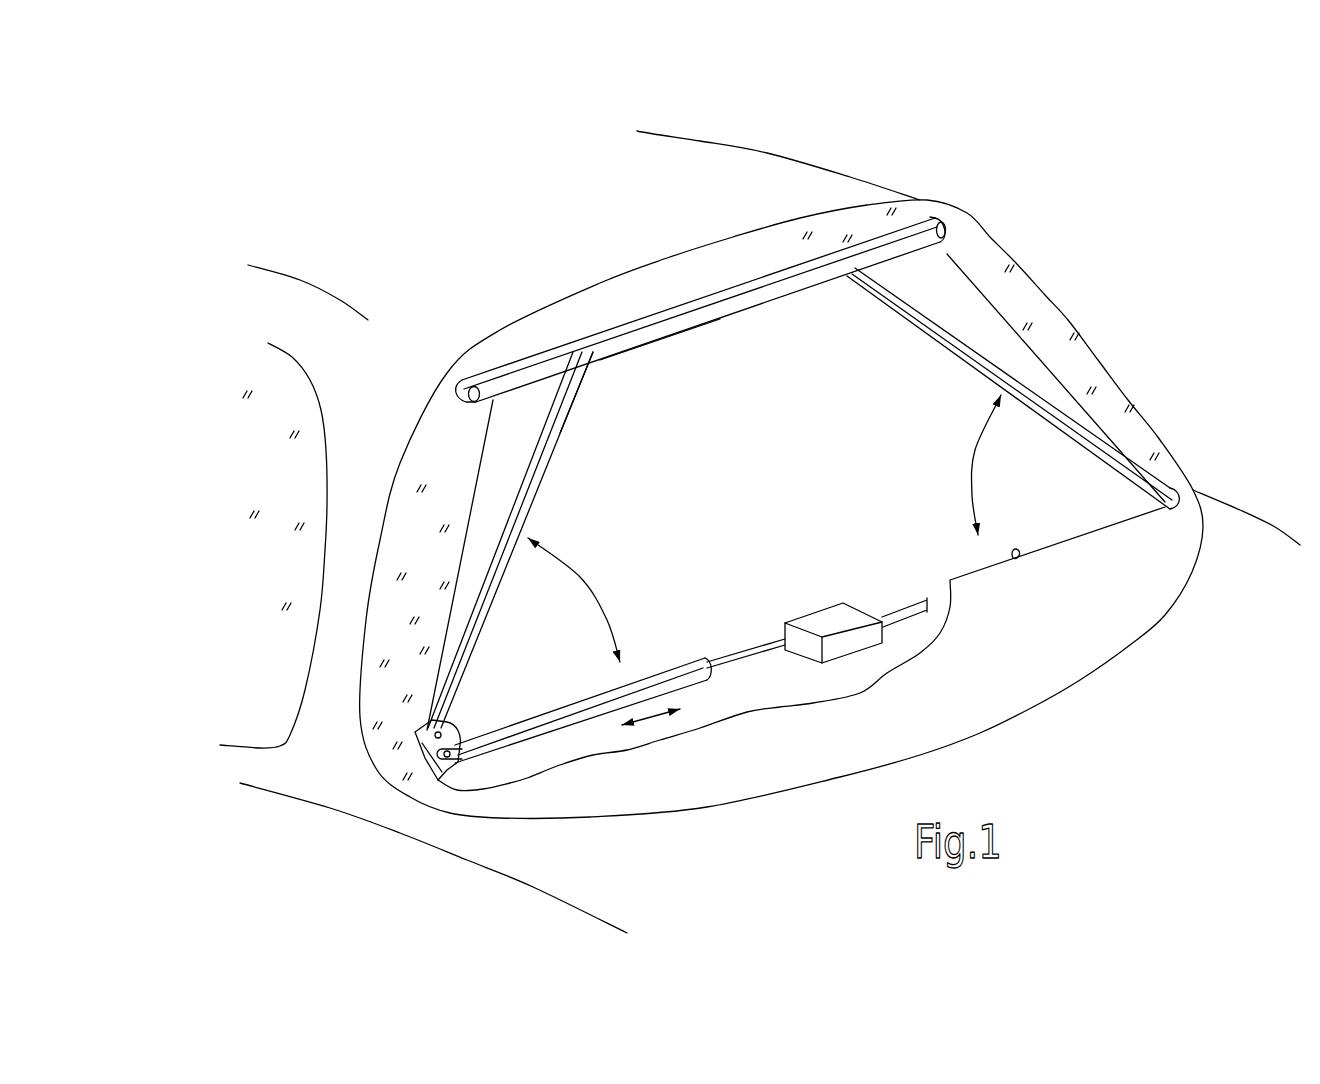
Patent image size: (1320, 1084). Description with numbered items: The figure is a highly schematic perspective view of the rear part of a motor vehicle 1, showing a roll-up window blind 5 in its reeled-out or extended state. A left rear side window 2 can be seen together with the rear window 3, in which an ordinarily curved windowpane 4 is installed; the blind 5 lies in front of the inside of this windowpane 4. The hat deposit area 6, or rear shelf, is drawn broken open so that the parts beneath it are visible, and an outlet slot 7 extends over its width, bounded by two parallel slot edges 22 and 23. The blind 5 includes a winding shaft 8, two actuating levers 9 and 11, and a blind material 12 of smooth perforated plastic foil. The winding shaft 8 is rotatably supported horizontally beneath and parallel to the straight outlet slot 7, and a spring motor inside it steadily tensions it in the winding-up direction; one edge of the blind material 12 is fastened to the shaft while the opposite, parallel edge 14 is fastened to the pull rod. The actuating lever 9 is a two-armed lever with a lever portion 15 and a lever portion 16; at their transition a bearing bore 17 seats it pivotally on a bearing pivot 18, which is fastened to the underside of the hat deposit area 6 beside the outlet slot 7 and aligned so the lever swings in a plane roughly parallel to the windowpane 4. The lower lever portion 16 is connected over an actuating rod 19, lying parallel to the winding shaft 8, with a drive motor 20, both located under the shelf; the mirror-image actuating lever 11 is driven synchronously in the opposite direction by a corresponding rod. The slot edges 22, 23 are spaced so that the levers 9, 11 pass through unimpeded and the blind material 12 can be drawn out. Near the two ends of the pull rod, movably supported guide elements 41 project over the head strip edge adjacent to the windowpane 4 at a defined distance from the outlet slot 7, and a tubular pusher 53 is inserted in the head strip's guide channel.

The motor vehicle 1 is at (1080, 162).
The left rear side window 2 is at (242, 668).
The rear window 3 is at (469, 463).
The windowpane 4 is at (433, 782).
The roll-up window blind 5 is at (672, 284).
The hat deposit area 6 is at (1083, 630).
The outlet slot 7 is at (1102, 524).
The winding shaft 8 is at (709, 684).
The actuating lever 9 is at (543, 497).
The actuating lever 11 is at (921, 338).
The blind material 12 is at (973, 277).
The edge of blind material 14 is at (705, 325).
The lever portion 15 is at (568, 421).
The lever portion 16 is at (436, 746).
The bearing bore 17 is at (441, 732).
The bearing pivot 18 is at (453, 750).
The actuating rod 19 is at (736, 653).
The drive motor 20 is at (830, 613).
The slot edge 22 is at (1017, 552).
The slot edge 23 is at (1167, 487).
The guide element 41 is at (458, 398).
The pusher 53 is at (926, 228).